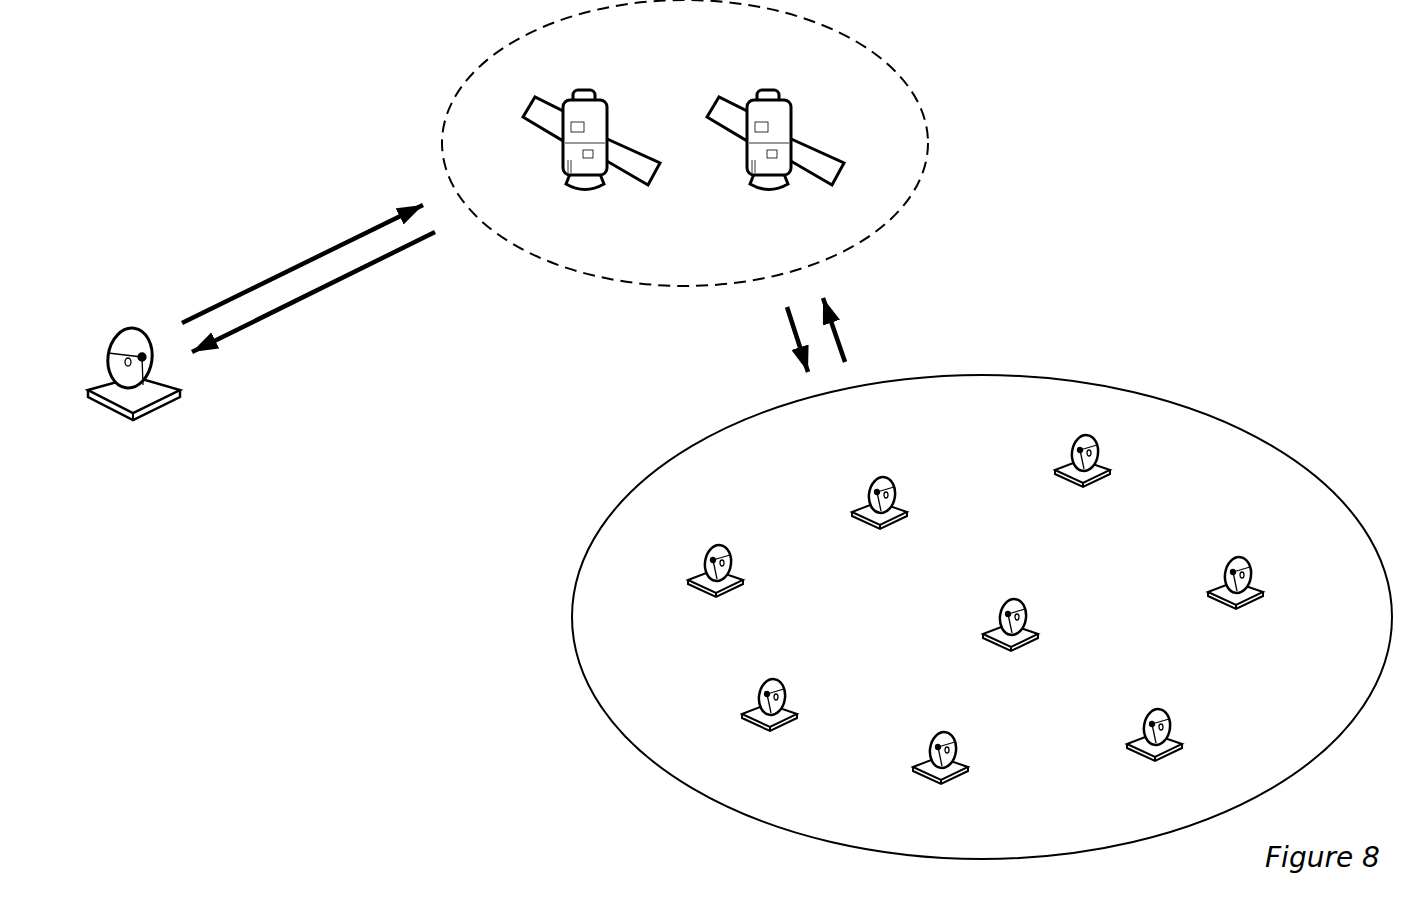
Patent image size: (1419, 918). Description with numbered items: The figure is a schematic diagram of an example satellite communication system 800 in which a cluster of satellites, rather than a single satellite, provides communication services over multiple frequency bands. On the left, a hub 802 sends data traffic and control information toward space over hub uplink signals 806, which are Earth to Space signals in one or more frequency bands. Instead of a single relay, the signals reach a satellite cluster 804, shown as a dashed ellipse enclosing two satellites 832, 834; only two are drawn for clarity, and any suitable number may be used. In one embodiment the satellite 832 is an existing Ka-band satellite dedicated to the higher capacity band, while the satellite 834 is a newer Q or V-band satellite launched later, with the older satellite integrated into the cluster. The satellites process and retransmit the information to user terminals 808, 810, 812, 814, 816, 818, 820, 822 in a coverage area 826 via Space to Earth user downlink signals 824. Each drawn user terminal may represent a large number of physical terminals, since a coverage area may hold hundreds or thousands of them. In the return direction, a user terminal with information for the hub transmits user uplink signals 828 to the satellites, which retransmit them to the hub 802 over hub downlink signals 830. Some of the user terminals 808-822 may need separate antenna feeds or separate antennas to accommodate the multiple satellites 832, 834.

The satellite communication system 800 is at (235, 665).
The hub 802 is at (105, 408).
The satellite cluster 804 is at (916, 195).
The hub uplink signals 806 is at (302, 258).
The user terminal 808 is at (1065, 486).
The user terminal 810 is at (858, 528).
The user terminal 812 is at (697, 592).
The user terminal 814 is at (990, 648).
The user terminal 816 is at (1218, 608).
The user terminal 818 is at (753, 726).
The user terminal 820 is at (922, 781).
The user terminal 822 is at (1135, 758).
The user downlink signals 824 is at (749, 348).
The coverage area 826 is at (982, 617).
The user uplink signals 828 is at (871, 323).
The hub downlink signals 830 is at (313, 300).
The satellite 832 is at (558, 161).
The satellite 834 is at (796, 100).